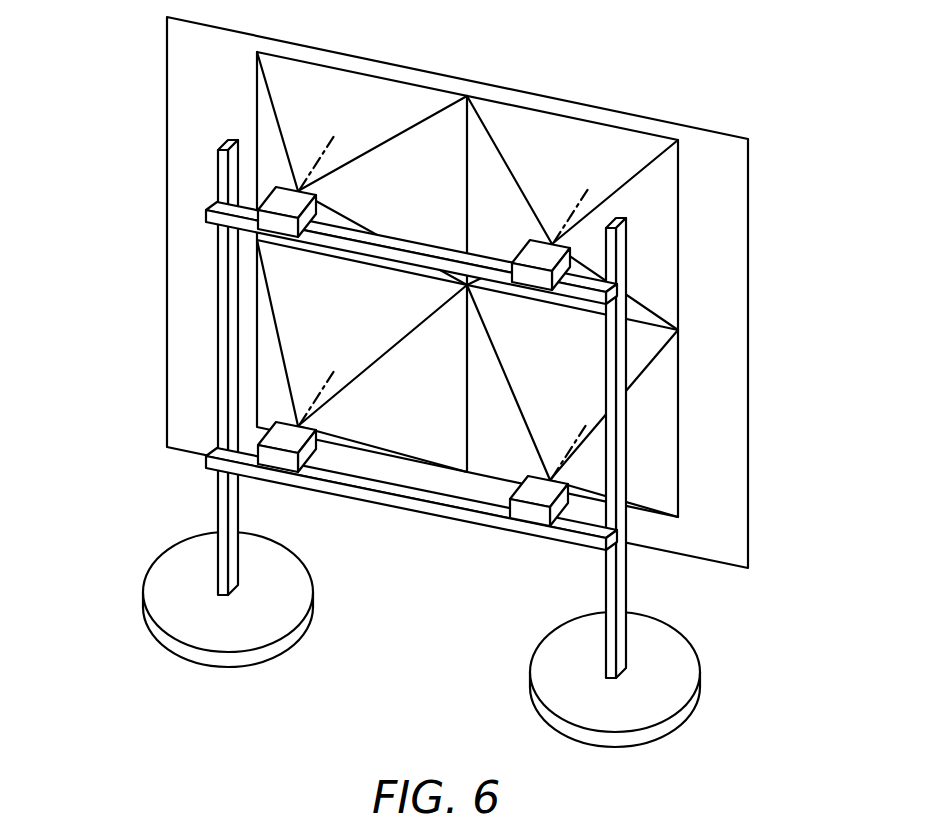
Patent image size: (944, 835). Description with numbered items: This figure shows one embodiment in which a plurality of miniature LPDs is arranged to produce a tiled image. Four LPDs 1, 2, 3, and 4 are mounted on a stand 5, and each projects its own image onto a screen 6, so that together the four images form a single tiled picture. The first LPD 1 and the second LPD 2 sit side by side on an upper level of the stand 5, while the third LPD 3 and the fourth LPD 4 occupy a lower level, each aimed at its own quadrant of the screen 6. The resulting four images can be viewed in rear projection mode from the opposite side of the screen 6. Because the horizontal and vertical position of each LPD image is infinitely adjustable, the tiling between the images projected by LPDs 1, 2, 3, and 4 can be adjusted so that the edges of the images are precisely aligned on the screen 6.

The LPD 1 is at (199, 137).
The LPD 2 is at (689, 238).
The LPD 3 is at (190, 393).
The LPD 4 is at (688, 468).
The stand 5 is at (363, 443).
The screen 6 is at (523, 292).